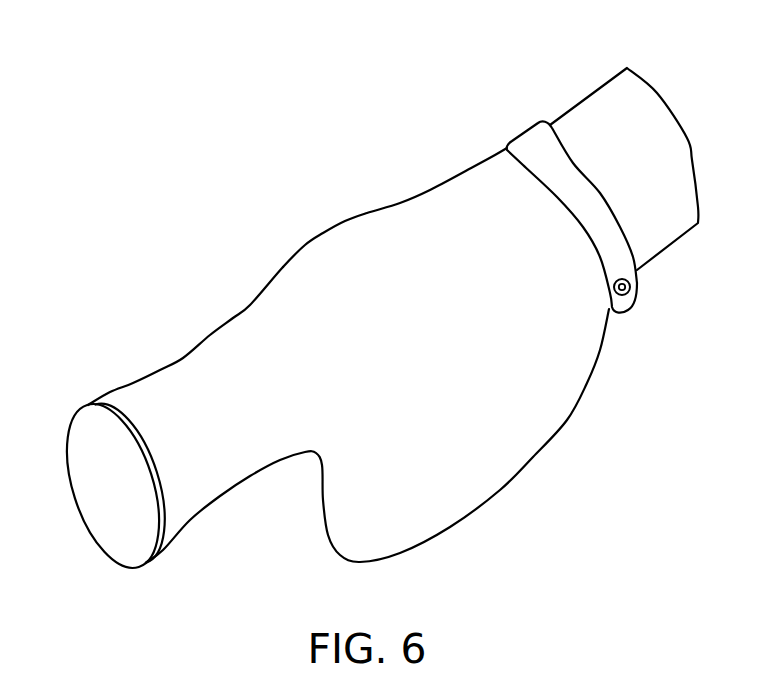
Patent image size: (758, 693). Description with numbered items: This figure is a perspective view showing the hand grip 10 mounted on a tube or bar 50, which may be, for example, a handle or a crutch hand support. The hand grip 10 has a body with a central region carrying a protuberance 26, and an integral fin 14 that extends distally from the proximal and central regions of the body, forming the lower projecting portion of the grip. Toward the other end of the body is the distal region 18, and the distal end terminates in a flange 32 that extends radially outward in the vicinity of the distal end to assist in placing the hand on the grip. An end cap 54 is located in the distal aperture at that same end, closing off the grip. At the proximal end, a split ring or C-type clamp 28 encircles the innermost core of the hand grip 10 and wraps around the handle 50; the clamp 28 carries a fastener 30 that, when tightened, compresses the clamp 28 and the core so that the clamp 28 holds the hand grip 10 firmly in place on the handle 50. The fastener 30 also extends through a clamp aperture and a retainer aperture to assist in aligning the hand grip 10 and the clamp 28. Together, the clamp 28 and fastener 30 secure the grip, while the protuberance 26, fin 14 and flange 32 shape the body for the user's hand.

The hand grip 10 is at (348, 355).
The fin 14 is at (450, 477).
The distal region 18 is at (248, 343).
The protuberance 26 is at (393, 233).
The clamp 28 is at (617, 258).
The fastener 30 is at (631, 287).
The flange 32 is at (122, 410).
The tube or bar 50 is at (598, 108).
The end cap 54 is at (108, 510).